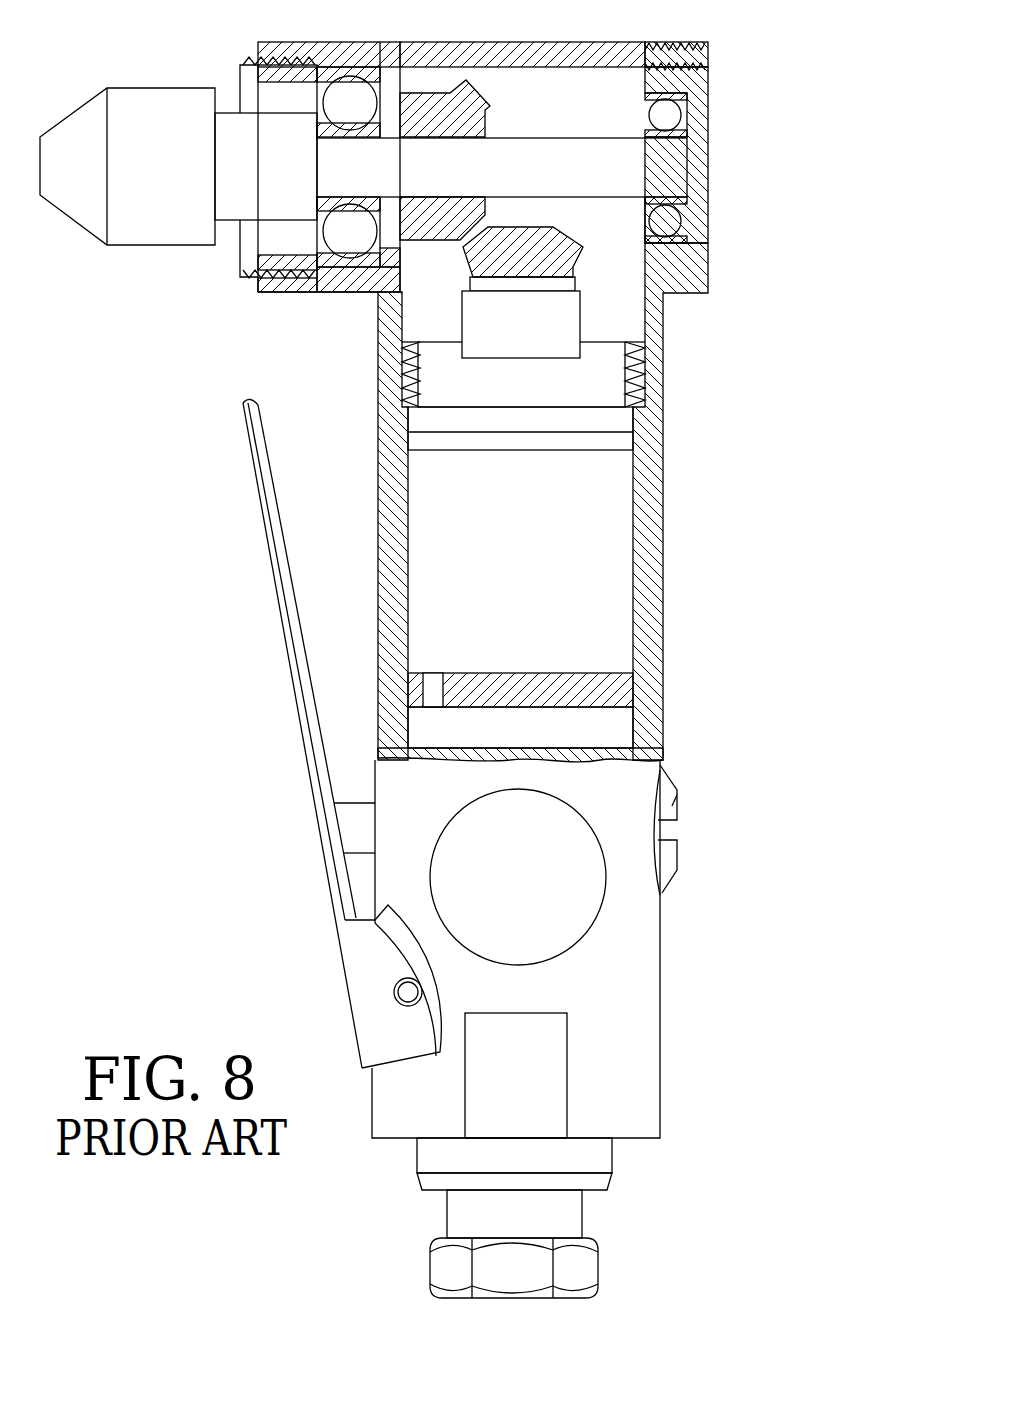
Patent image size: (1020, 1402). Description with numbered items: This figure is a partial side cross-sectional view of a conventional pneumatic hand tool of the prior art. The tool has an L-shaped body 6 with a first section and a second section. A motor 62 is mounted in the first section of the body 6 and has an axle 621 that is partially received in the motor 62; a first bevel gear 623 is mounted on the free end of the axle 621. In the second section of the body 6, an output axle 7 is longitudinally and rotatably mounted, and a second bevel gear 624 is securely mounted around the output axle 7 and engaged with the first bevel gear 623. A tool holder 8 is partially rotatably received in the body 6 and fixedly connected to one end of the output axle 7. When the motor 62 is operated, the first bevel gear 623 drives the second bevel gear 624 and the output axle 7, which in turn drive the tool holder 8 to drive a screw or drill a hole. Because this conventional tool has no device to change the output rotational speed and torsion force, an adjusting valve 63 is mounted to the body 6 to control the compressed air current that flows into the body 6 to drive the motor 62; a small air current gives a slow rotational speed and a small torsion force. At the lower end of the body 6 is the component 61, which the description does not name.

The L-shaped body 6 is at (655, 470).
The output axle 7 is at (586, 150).
The tool holder 8 is at (135, 103).
The air inlet nut 61 is at (552, 1298).
The motor 62 is at (610, 578).
The adjusting valve 63 is at (677, 788).
The axle 621 is at (572, 318).
The first bevel gear 623 is at (575, 235).
The second bevel gear 624 is at (494, 123).